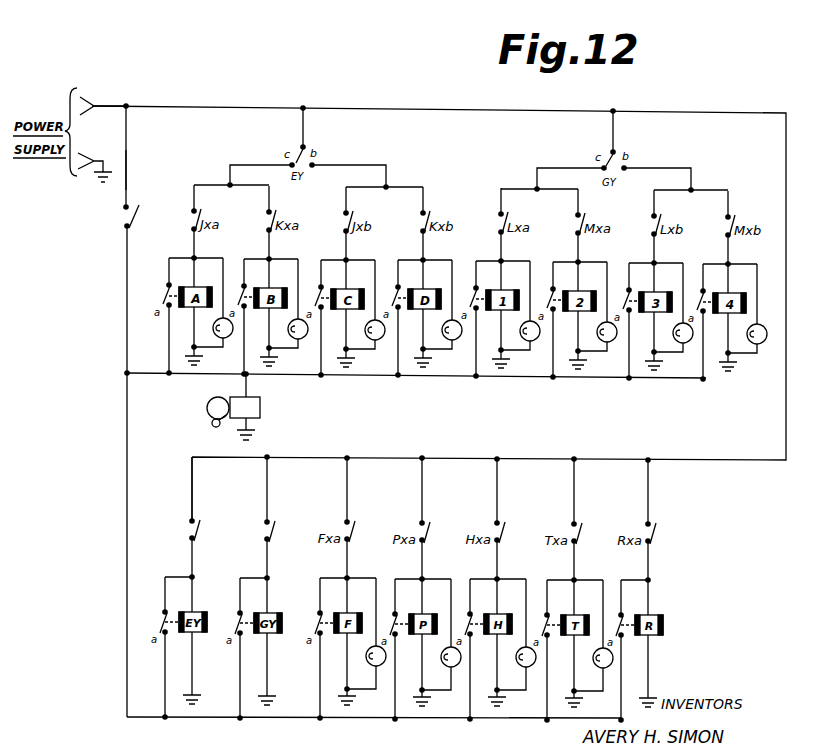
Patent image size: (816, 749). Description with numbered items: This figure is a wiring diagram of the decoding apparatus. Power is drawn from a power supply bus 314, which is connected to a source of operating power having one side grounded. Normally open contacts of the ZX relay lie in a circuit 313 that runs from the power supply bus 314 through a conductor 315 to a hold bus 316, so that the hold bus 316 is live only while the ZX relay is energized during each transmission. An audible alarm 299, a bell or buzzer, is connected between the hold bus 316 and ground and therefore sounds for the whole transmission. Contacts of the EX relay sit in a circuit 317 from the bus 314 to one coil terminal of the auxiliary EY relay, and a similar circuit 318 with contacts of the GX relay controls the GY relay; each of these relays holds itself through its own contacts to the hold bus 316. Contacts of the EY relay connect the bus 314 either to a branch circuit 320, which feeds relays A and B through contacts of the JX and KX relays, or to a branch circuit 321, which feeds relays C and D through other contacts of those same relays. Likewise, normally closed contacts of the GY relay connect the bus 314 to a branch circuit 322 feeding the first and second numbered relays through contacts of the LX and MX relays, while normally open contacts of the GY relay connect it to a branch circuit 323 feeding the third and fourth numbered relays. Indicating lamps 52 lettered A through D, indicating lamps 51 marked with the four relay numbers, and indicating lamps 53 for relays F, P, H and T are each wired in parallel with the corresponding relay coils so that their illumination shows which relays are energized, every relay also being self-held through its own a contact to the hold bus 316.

The power supply bus 314 is at (103, 106).
The circuit 313 is at (128, 178).
The conductor 315 is at (126, 301).
The hold bus 316 is at (293, 376).
The branch circuit 320 is at (220, 166).
The branch circuit 321 is at (407, 188).
The branch circuit 322 is at (512, 189).
The branch circuit 323 is at (699, 190).
The audible alarm 299 is at (260, 409).
The indicating lamps 52 is at (229, 338).
The indicating lamps 51 is at (536, 341).
The indicating lamps 53 is at (373, 666).
The circuit 317 is at (192, 498).
The circuit 318 is at (267, 495).